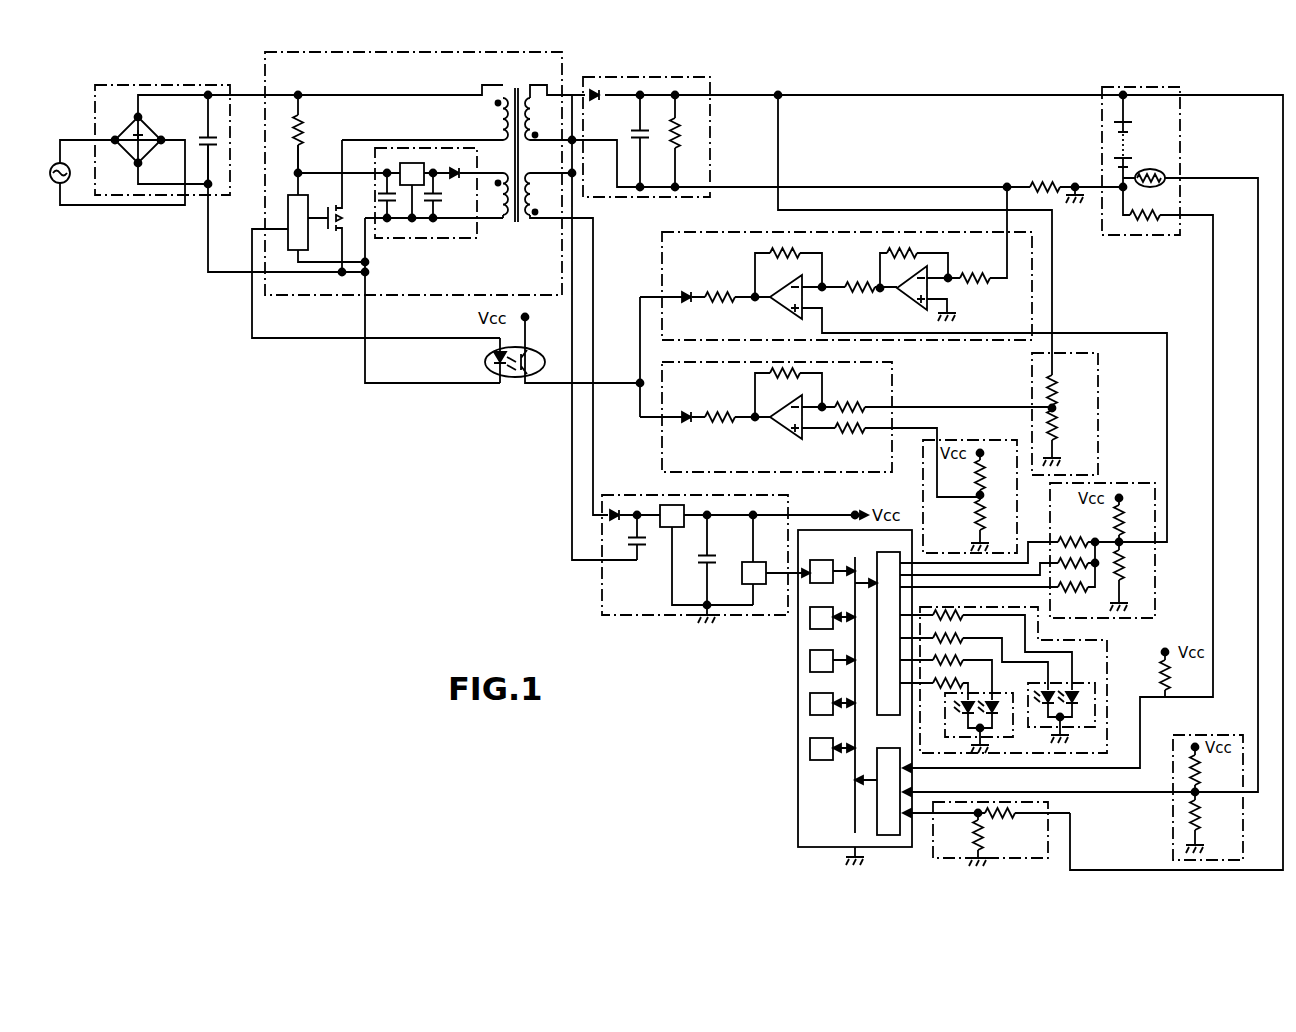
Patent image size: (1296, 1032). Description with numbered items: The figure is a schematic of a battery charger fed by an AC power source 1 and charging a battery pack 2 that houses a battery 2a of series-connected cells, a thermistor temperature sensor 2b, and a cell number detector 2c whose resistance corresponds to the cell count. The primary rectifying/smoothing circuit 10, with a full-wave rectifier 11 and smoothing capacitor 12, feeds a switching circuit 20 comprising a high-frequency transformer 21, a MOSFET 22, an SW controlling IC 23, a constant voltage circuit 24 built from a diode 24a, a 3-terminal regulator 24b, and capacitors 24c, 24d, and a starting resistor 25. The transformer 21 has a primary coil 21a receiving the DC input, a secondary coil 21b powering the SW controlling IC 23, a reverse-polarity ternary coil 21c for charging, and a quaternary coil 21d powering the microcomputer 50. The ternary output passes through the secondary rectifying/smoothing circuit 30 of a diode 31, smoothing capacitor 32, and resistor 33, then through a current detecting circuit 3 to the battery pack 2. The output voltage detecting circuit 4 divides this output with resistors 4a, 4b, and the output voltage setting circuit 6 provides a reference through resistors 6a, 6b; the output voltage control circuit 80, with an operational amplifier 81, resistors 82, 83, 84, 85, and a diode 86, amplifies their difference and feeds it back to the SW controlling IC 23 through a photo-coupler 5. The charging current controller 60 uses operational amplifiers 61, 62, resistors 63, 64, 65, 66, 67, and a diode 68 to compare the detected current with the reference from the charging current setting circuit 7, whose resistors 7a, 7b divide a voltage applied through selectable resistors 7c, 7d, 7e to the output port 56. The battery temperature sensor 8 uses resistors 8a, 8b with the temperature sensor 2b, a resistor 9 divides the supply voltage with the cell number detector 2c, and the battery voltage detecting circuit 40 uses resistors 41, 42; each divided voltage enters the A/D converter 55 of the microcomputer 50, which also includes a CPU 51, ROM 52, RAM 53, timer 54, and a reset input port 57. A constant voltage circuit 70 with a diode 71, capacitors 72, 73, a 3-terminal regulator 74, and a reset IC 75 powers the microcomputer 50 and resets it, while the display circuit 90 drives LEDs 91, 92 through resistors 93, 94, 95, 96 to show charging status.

The AC power source 1 is at (72, 173).
The battery pack 2 is at (1176, 86).
The battery 2a is at (1133, 130).
The temperature sensor 2b is at (1153, 168).
The cell number detector 2c is at (1165, 212).
The current detecting circuit 3 is at (1045, 180).
The output voltage detecting circuit 4 is at (1100, 370).
The resistor 4a is at (1057, 390).
The resistor 4b is at (1057, 430).
The photo-coupler 5 is at (486, 360).
The output voltage setting circuit 6 is at (978, 440).
The resistor 6a is at (985, 475).
The resistor 6b is at (985, 515).
The charging current setting circuit 7 is at (1122, 483).
The resistor 7a is at (1122, 518).
The resistor 7b is at (1122, 570).
The resistor 7c is at (1070, 538).
The resistor 7d is at (1068, 560).
The resistor 7e is at (1070, 590).
The battery temperature sensor 8 is at (1210, 735).
The resistor 8a is at (1202, 770).
The resistor 8b is at (1202, 810).
The resistor 9 is at (1172, 672).
The primary rectifying/smoothing circuit 10 is at (127, 85).
The full-wave rectifier 11 is at (128, 128).
The smoothing capacitor 12 is at (200, 138).
The switching circuit 20 is at (265, 78).
The high-frequency transformer 21 is at (510, 88).
The primary coil 21a is at (498, 102).
The secondary coil 21b is at (505, 220).
The ternary coil 21c is at (532, 105).
The quaternary coil 21d is at (532, 222).
The MOSFET 22 is at (340, 216).
The SW controlling IC 23 is at (308, 205).
The constant voltage circuit 24 is at (375, 170).
The diode 24a is at (452, 170).
The 3-terminal regulator 24b is at (410, 162).
The capacitor 24c is at (433, 225).
The capacitor 24d is at (387, 225).
The starting resistor 25 is at (308, 130).
The secondary rectifying/smoothing circuit 30 is at (712, 82).
The diode 31 is at (597, 102).
The smoothing capacitor 32 is at (644, 134).
The resistor 33 is at (678, 132).
The battery voltage detecting circuit 40 is at (1050, 810).
The resistor 41 is at (1000, 825).
The resistor 42 is at (968, 835).
The microcomputer 50 is at (798, 770).
The CPU 51 is at (826, 609).
The ROM 52 is at (826, 652).
The RAM 53 is at (826, 695).
The timer 54 is at (826, 740).
The A/D converter 55 is at (888, 748).
The output port 56 is at (885, 552).
The reset input port 57 is at (825, 560).
The charging current controller 60 is at (730, 230).
The operational amplifier 61 is at (900, 300).
The operational amplifier 62 is at (770, 308).
The resistor 63 is at (978, 272).
The resistor 64 is at (902, 256).
The resistor 65 is at (852, 282).
The resistor 66 is at (780, 258).
The resistor 67 is at (722, 290).
The diode 68 is at (688, 290).
The constant voltage circuit 70 is at (618, 492).
The diode 71 is at (617, 522).
The capacitor 72 is at (640, 540).
The capacitor 73 is at (703, 565).
The 3-terminal regulator 74 is at (678, 528).
The reset IC 75 is at (748, 562).
The output voltage control circuit 80 is at (893, 378).
The operational amplifier 81 is at (770, 430).
The resistor 82 is at (848, 405).
The resistor 83 is at (843, 435).
The resistor 84 is at (782, 378).
The resistor 85 is at (728, 410).
The diode 86 is at (688, 410).
The display circuit 90 is at (1107, 662).
The LED 91 is at (1076, 683).
The LED 92 is at (998, 693).
The resistor 93 is at (960, 618).
The resistor 94 is at (960, 640).
The resistor 95 is at (960, 662).
The resistor 96 is at (940, 688).